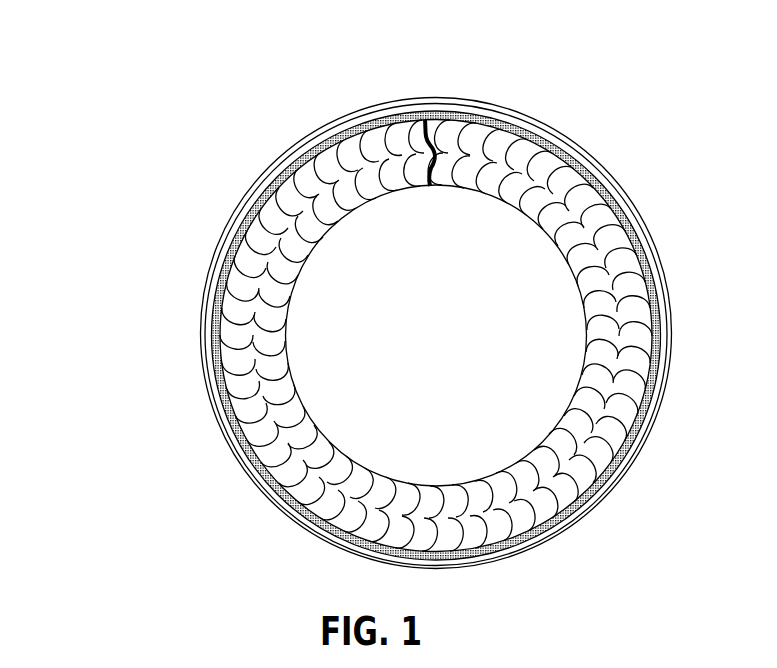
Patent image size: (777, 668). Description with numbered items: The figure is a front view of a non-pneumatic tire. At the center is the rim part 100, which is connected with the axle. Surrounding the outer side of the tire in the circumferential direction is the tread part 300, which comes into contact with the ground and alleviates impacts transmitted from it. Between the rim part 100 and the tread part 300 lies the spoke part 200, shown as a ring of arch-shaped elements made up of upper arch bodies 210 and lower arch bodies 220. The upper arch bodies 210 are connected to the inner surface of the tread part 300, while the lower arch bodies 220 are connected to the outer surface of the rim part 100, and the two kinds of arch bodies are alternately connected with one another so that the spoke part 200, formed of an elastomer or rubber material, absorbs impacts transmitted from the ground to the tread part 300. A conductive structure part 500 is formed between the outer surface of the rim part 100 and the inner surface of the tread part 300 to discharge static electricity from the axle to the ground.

The rim part 100 is at (456, 344).
The spoke part 200 is at (82, 273).
The upper arch bodies 210 is at (224, 288).
The lower arch bodies 220 is at (225, 378).
The tread part 300 is at (611, 183).
The conductive structure part 500 is at (433, 118).